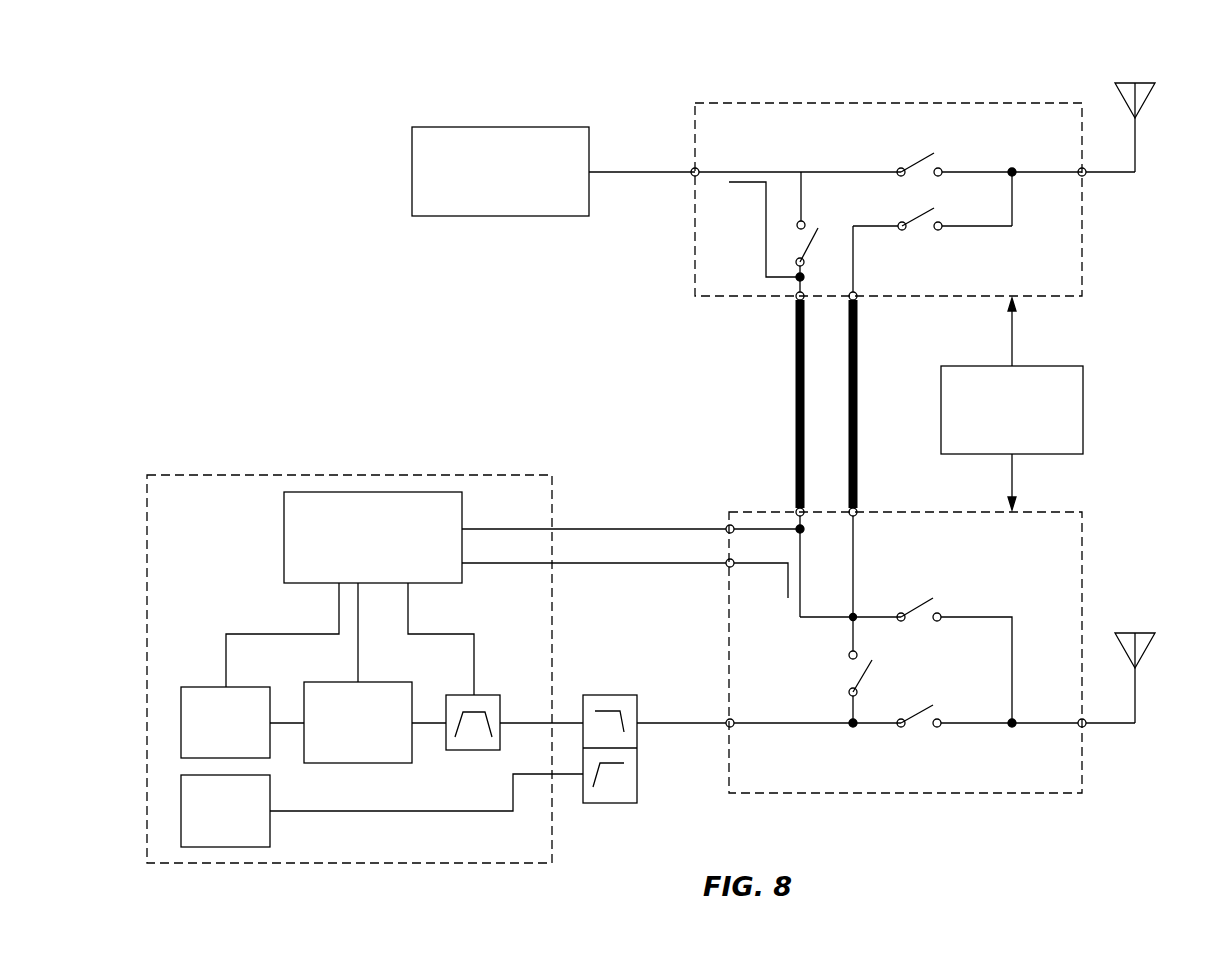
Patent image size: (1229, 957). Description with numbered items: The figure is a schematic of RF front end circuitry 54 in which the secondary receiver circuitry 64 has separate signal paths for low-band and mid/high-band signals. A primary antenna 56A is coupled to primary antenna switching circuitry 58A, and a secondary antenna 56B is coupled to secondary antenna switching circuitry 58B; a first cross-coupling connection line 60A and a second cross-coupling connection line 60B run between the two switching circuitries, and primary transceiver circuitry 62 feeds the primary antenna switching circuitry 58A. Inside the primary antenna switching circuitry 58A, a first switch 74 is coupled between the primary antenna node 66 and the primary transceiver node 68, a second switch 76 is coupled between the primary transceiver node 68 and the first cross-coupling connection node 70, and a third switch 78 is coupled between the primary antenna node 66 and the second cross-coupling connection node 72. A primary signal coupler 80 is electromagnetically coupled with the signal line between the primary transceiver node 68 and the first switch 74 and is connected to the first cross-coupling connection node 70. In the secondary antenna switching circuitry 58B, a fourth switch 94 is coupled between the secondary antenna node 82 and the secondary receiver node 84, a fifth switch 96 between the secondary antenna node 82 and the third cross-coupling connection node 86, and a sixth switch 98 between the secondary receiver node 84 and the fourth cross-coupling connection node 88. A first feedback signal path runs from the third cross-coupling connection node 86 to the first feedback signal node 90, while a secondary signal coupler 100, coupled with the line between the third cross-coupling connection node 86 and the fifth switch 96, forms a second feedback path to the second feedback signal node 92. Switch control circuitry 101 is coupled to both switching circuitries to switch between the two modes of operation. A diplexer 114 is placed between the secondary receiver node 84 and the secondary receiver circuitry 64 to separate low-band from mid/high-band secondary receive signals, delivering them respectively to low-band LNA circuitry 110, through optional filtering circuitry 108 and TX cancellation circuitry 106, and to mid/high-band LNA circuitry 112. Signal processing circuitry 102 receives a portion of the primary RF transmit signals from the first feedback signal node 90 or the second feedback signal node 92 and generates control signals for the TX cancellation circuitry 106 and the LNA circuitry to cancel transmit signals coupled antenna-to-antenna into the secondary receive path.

The RF front end circuitry 54 is at (348, 55).
The primary antenna 56A is at (1142, 83).
The secondary antenna 56B is at (1142, 633).
The primary antenna switching circuitry 58A is at (1029, 283).
The secondary antenna switching circuitry 58B is at (1027, 777).
The first cross-coupling connection line 60A is at (795, 408).
The second cross-coupling connection line 60B is at (858, 408).
The primary transceiver circuitry 62 is at (488, 202).
The secondary receiver circuitry 64 is at (462, 476).
The primary antenna node 66 is at (1086, 176).
The primary transceiver node 68 is at (692, 176).
The first cross-coupling connection node 70 is at (797, 298).
The second cross-coupling connection node 72 is at (857, 299).
The first switch 74 is at (904, 146).
The second switch 76 is at (815, 209).
The third switch 78 is at (929, 243).
The primary signal coupler 80 is at (742, 204).
The secondary antenna node 82 is at (1086, 727).
The secondary receiver node 84 is at (728, 728).
The third cross-coupling connection node 86 is at (797, 510).
The fourth cross-coupling connection node 88 is at (858, 509).
The first feedback signal node 90 is at (728, 523).
The second feedback signal node 92 is at (728, 568).
The fourth switch 94 is at (925, 745).
The fifth switch 96 is at (936, 584).
The sixth switch 98 is at (889, 667).
The secondary signal coupler 100 is at (775, 595).
The switch control circuitry 101 is at (995, 442).
The signal processing circuitry 102 is at (356, 568).
The TX cancellation circuitry 106 is at (341, 757).
The optional filtering circuitry 108 is at (483, 694).
The low-band LNA circuitry 110 is at (268, 668).
The mid/high-band LNA circuitry 112 is at (300, 782).
The diplexer 114 is at (619, 694).